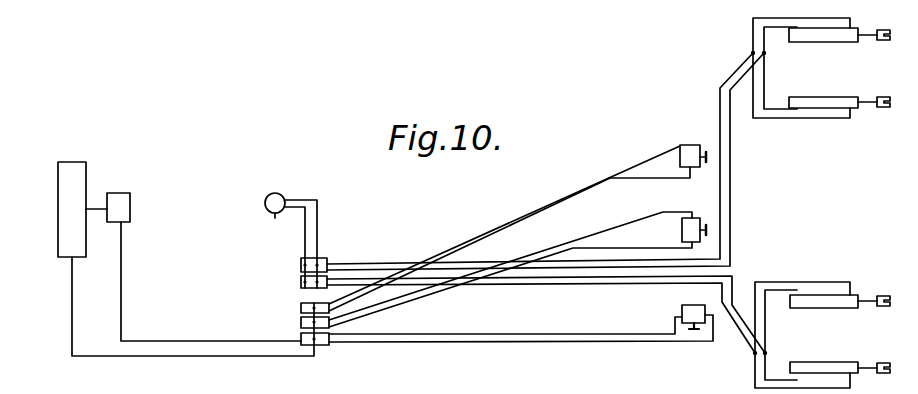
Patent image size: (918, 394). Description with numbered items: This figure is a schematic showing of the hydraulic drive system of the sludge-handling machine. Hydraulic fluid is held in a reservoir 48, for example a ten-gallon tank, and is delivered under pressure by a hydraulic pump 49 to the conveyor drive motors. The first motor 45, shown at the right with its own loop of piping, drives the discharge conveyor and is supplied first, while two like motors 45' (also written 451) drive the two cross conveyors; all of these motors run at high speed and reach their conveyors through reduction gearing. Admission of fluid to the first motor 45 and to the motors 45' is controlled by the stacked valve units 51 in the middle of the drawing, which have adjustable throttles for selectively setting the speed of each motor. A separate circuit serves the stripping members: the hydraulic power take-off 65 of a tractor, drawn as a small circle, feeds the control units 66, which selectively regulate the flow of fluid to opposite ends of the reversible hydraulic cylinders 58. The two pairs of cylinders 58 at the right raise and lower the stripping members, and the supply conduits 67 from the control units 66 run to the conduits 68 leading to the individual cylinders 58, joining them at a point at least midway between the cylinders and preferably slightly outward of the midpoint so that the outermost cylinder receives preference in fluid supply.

The reservoir 48 is at (66, 210).
The hydraulic pump 49 is at (130, 209).
The hydraulic power take-off 65 is at (289, 225).
The control units 66 is at (301, 280).
The valve units 51 is at (301, 338).
The motors 45' is at (517, 223).
The motors 451 is at (517, 223).
The first motor 45 is at (521, 318).
The hydraulic cylinders 58 is at (831, 42).
The supply conduits 67 is at (720, 138).
The conduits 68 is at (765, 54).